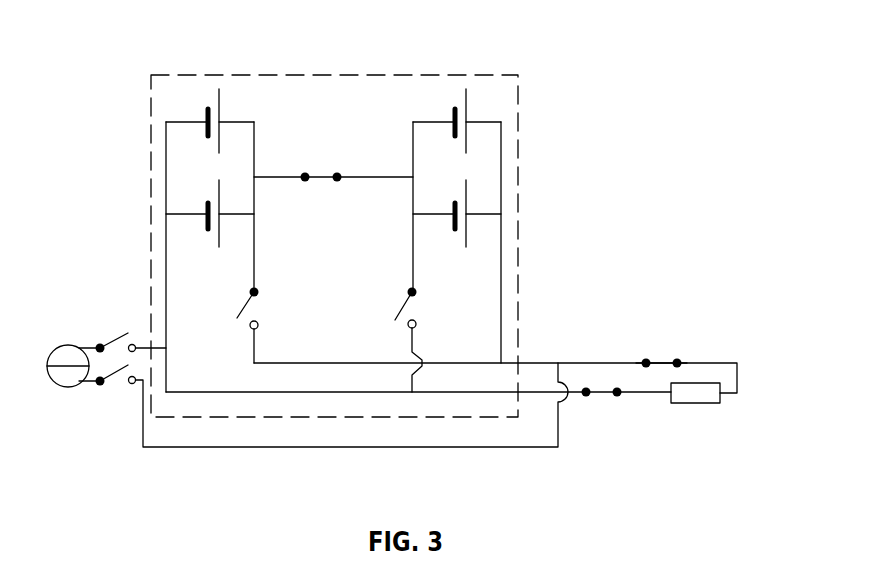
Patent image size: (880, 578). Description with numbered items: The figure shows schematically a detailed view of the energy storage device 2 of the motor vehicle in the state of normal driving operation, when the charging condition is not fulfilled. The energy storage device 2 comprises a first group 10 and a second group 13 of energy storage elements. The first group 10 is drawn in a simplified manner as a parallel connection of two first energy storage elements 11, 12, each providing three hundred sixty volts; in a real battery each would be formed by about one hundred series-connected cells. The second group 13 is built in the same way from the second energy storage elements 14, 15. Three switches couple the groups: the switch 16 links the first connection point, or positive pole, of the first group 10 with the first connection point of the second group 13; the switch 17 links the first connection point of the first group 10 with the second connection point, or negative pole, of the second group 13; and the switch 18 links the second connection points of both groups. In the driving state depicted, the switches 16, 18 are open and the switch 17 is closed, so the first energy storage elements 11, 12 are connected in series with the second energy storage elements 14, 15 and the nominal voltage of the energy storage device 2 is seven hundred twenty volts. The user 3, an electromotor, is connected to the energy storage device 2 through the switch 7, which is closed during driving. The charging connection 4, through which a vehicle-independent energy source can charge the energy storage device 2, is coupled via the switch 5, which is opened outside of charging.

The energy storage device 2 is at (500, 105).
The user 3 is at (695, 403).
The charging connection 4 is at (63, 345).
The switch 5 is at (108, 332).
The switch 7 is at (666, 353).
The first group 10 is at (221, 199).
The first energy storage element 11 is at (211, 93).
The first energy storage element 12 is at (210, 190).
The second group 13 is at (435, 190).
The second energy storage element 14 is at (457, 102).
The second energy storage element 15 is at (458, 192).
The switch 16 is at (245, 305).
The switch 17 is at (321, 180).
The switch 18 is at (413, 308).